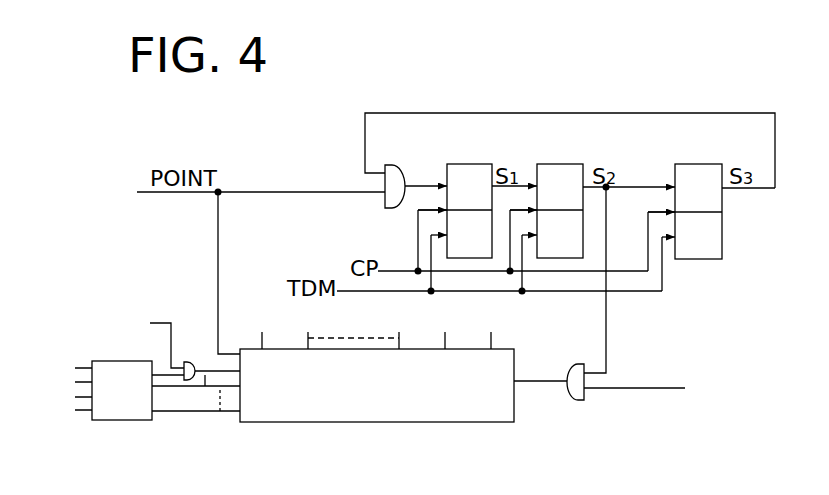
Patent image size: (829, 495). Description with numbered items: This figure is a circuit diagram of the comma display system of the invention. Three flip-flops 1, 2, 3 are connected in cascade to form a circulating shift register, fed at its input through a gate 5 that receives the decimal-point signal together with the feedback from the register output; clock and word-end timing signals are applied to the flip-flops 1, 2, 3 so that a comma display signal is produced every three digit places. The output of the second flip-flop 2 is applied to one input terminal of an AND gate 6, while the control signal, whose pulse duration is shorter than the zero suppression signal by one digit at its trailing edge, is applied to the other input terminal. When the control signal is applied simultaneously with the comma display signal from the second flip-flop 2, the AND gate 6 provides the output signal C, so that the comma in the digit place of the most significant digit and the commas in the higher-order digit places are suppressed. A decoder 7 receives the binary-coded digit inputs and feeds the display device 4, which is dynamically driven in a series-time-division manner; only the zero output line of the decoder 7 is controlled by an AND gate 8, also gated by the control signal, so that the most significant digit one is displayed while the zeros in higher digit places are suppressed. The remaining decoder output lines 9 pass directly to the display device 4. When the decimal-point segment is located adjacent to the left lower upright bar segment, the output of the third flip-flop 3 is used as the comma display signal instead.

The flip-flop 1 is at (470, 164).
The flip-flop 2 is at (560, 164).
The flip-flop 3 is at (695, 164).
The display device 4 is at (452, 422).
The gate 5 is at (394, 165).
The AND gate 6 is at (575, 364).
The decoder 7 is at (128, 421).
The AND gate 8 is at (188, 362).
The data lines 9 is at (299, 376).